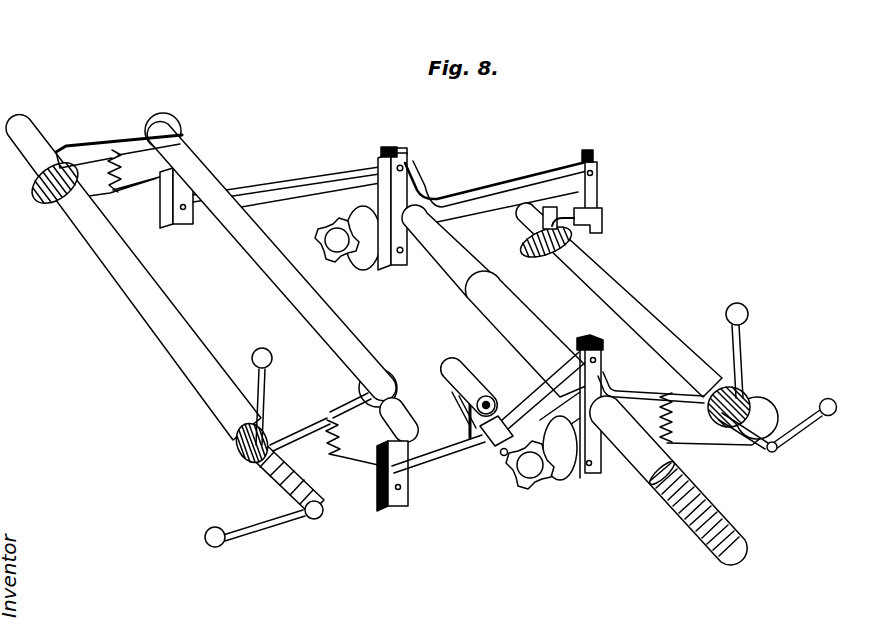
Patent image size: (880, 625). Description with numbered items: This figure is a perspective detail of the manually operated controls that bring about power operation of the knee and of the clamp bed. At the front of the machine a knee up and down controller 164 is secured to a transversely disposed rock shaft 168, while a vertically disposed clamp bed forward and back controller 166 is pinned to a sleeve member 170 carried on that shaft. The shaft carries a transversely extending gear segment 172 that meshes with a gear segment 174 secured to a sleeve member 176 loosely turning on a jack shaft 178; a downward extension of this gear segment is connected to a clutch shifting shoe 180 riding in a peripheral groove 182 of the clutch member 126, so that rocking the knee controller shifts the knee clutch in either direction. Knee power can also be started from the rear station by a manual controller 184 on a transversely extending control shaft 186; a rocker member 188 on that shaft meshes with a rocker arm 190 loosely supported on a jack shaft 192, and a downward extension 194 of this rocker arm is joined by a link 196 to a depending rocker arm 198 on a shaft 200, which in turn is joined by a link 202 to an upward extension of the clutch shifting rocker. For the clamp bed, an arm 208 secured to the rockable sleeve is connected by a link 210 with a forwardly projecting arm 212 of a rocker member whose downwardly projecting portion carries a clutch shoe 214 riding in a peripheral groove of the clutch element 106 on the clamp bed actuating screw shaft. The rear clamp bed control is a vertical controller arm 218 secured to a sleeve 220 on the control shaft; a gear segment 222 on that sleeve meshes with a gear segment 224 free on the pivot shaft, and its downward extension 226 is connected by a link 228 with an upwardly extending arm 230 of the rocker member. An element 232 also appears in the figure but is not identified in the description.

The clutch element 106 is at (342, 214).
The clutch member 126 is at (540, 483).
The front knee up and down controller 164 is at (807, 411).
The front clamp bed forward and back power controller 166 is at (743, 351).
The rock shaft 168 is at (775, 452).
The sleeve member 170 is at (650, 318).
The gear segment 172 is at (694, 431).
The gear segment 174 is at (643, 401).
The sleeve member 176 is at (523, 318).
The jack shaft 178 is at (460, 264).
The clutch shifting shoe 180 is at (568, 487).
The peripheral groove 182 is at (507, 460).
The manual controller 184 is at (245, 527).
The control shaft 186 is at (305, 520).
The rocker member 188 is at (303, 442).
The rocker arm 190 is at (352, 410).
The jack shaft 192 is at (275, 278).
The downward extension 194 is at (393, 467).
The link 196 is at (437, 457).
The rocker arm 198 is at (462, 400).
The shaft 200 is at (461, 370).
The link 202 is at (533, 408).
The arm 208 is at (598, 240).
The link 210 is at (599, 191).
The forwardly projecting arm 212 is at (471, 194).
The clutch shoe 214 is at (392, 153).
The controller arm 218 is at (258, 396).
The sleeve 220 is at (203, 399).
The gear segment 222 is at (88, 162).
The gear segment 224 is at (130, 150).
The downward extension 226 is at (165, 184).
The link 228 is at (256, 194).
The upwardly extending arm 230 is at (402, 149).
The collar 232 is at (316, 239).